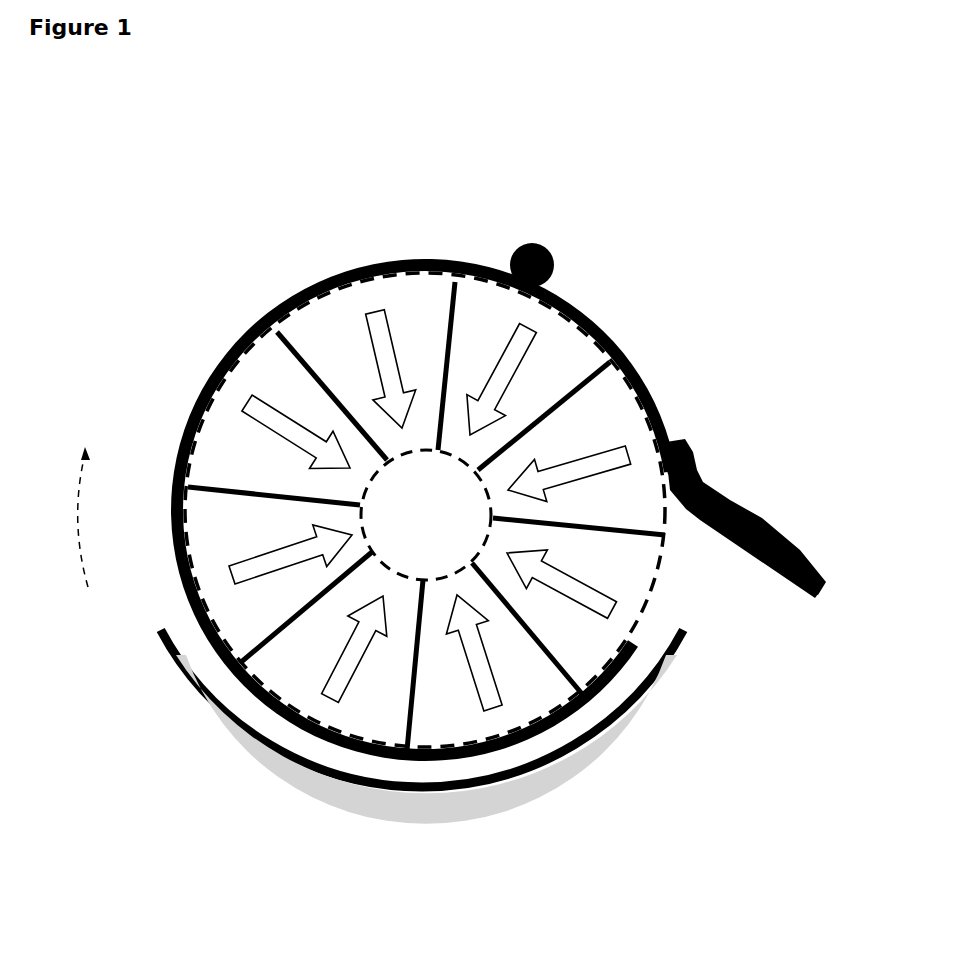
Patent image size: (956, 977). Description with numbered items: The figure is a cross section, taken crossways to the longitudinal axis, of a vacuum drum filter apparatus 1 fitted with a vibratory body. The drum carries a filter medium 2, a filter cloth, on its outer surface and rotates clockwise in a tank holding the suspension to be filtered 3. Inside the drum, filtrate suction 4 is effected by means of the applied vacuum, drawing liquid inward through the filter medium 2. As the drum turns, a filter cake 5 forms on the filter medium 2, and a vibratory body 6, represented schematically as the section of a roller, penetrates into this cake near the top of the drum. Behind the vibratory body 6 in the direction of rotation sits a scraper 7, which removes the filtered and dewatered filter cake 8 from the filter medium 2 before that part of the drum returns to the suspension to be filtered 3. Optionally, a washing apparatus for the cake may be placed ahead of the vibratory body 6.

The vacuum drum filter apparatus 1 is at (234, 443).
The filter medium 2 is at (253, 347).
The suspension to be filtered 3 is at (508, 757).
The filtrate suction 4 is at (426, 515).
The filter cake 5 is at (295, 297).
The vibratory body 6 is at (555, 248).
The scraper 7 is at (750, 562).
The filtered and dewatered filter cake 8 is at (715, 468).